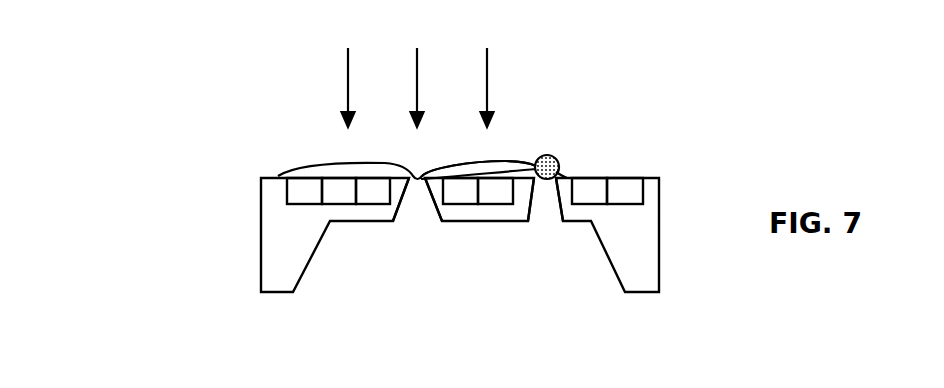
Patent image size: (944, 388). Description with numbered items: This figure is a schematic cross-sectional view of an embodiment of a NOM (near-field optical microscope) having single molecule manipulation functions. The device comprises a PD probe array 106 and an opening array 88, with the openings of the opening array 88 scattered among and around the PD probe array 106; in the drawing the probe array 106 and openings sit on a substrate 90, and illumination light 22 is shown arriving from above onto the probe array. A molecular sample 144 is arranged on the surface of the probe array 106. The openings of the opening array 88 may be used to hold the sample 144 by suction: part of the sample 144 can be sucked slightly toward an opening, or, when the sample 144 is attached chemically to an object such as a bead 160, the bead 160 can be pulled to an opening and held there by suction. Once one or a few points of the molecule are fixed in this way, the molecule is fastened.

The illumination light 22 is at (425, 69).
The opening array 88 is at (546, 187).
The substrate 90 is at (278, 255).
The PD probe array 106 is at (283, 194).
The molecular sample 144 is at (521, 165).
The bead 160 is at (553, 157).